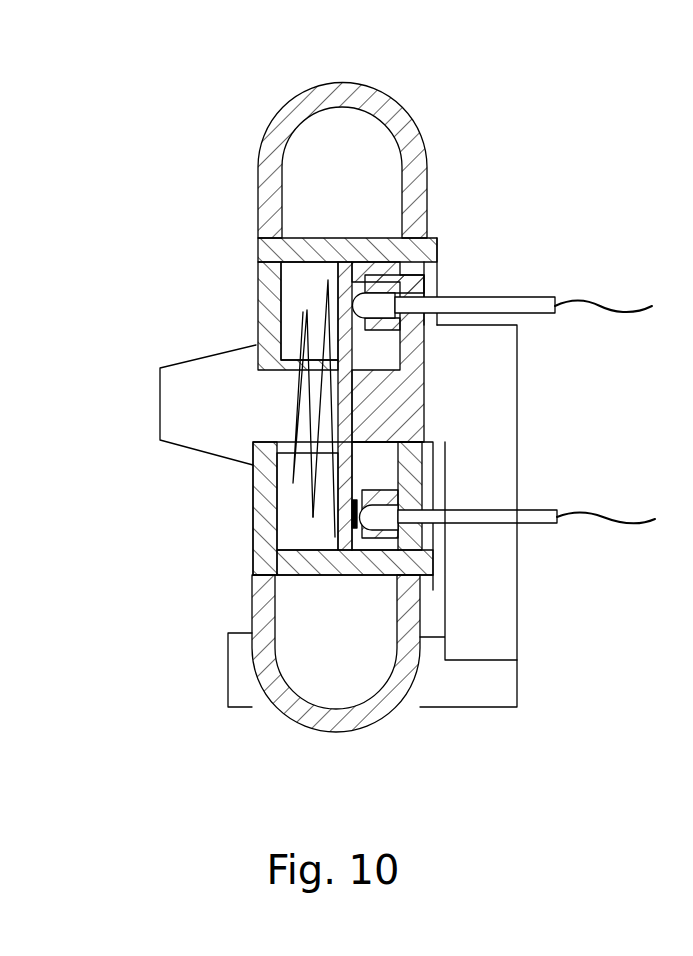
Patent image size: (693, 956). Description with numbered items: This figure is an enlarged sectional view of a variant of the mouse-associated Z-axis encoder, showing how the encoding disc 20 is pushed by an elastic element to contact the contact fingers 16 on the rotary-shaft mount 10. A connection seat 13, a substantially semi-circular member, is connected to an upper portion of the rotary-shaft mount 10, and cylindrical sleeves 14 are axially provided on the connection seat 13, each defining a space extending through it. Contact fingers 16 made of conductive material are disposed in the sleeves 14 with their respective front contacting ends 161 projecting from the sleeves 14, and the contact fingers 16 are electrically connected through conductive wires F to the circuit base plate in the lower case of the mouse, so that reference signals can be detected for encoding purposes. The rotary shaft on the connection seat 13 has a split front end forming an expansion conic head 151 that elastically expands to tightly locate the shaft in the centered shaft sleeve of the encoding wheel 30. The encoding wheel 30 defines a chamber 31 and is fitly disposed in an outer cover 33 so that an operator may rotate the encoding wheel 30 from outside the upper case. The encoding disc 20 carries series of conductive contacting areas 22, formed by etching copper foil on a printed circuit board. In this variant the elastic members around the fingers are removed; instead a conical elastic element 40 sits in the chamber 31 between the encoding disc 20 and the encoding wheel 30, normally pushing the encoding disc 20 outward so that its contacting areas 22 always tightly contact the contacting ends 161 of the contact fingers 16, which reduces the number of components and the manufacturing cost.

The rotary-shaft mount 10 is at (505, 412).
The connection seat 13 is at (420, 352).
The cylindrical sleeve 14 is at (387, 495).
The contact finger 16 is at (503, 303).
The contacting end 161 is at (378, 303).
The expansion conic head 151 is at (178, 423).
The encoding disc 20 is at (347, 273).
The conductive contacting area 22 is at (345, 502).
The encoding wheel 30 is at (263, 292).
The chamber 31 is at (295, 283).
The outer cover 33 is at (343, 92).
The conical elastic element 40 is at (325, 311).
The conductive wire F is at (597, 306).